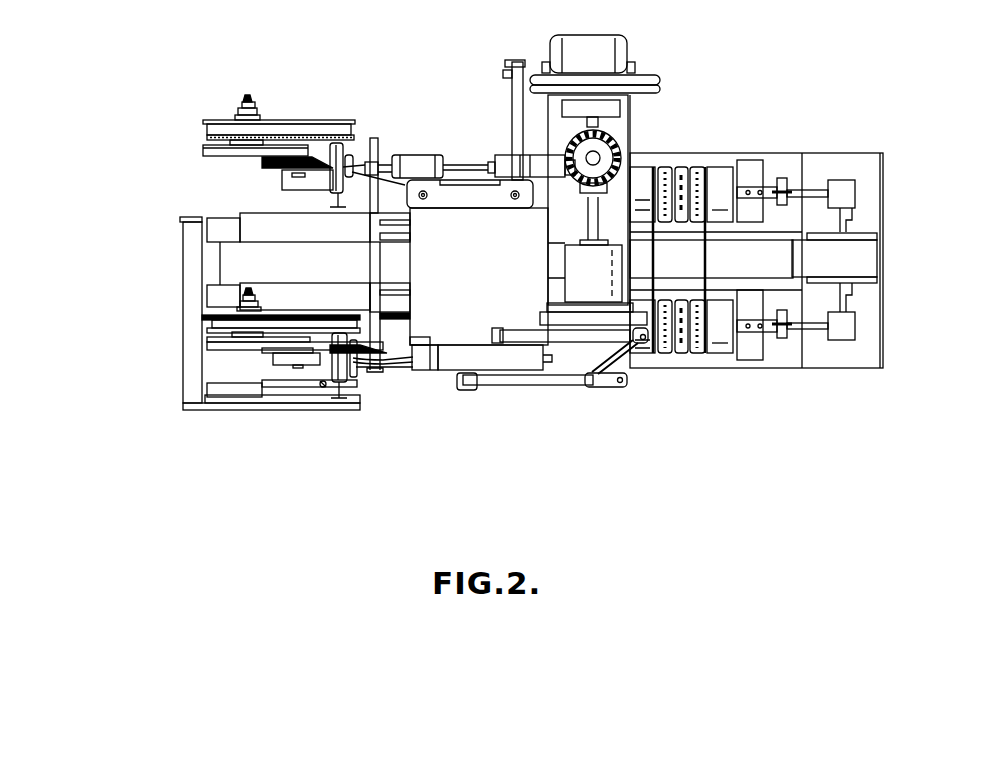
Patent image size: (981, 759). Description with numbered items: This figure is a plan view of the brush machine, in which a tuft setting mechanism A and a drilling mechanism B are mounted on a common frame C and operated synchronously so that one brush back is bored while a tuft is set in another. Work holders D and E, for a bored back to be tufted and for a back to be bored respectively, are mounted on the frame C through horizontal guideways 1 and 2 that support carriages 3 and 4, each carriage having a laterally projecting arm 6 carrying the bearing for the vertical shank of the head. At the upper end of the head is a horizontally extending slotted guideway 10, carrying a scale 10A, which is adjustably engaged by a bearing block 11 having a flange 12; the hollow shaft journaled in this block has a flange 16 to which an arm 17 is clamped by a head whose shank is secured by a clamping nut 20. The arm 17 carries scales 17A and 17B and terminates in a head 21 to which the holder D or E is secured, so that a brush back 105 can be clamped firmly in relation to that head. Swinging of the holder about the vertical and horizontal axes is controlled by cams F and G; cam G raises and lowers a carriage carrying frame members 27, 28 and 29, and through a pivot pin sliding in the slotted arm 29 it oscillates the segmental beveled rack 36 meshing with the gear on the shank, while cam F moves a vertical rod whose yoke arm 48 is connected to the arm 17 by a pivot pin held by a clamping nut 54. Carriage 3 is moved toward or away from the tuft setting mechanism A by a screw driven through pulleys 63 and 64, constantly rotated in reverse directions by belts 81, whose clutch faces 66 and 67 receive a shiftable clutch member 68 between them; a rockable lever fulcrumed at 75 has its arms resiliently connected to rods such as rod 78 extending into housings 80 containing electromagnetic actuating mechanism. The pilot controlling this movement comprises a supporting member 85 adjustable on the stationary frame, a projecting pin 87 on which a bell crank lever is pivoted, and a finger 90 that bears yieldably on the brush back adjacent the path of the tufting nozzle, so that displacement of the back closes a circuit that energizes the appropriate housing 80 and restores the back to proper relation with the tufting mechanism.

The horizontal guideway 1 is at (207, 287).
The horizontal guideway 2 is at (222, 227).
The carriage 3 is at (263, 290).
The carriage 4 is at (262, 238).
The laterally projecting arm 6 is at (320, 382).
The slotted guideway 10 is at (317, 120).
The scale 10A is at (205, 137).
The bearing block 11 is at (257, 110).
The flange 12 is at (257, 333).
The flange 16 is at (228, 340).
The arm 17 is at (235, 343).
The scale 17A is at (203, 150).
The scale 17B is at (270, 160).
The clamping nut 20 is at (252, 98).
The head 21 is at (333, 170).
The frame member 27 is at (192, 375).
The arm 28 is at (205, 225).
The arm 29 is at (243, 403).
The segmental beveled rack 36 is at (320, 392).
The yoke arm 48 is at (277, 358).
The clamping nut 54 is at (265, 365).
The pulley 63 is at (648, 355).
The pulley 64 is at (715, 355).
The clutch face 66 is at (663, 355).
The clutch face 67 is at (700, 355).
The shiftable clutch member 68 is at (681, 355).
The fulcrum 75 is at (783, 340).
The rod 78 is at (815, 330).
The housing 80 is at (852, 193).
The belt 81 is at (702, 247).
The supporting member 85 is at (393, 285).
The projecting pin 87 is at (407, 317).
The finger 90 is at (400, 340).
The brush back 105 is at (397, 148).
The tuft setting mechanism A is at (406, 374).
The drilling mechanism B is at (406, 152).
The frame C is at (232, 259).
The work holder D is at (354, 378).
The work holder E is at (351, 151).
The cam F is at (182, 324).
The cam G is at (182, 316).